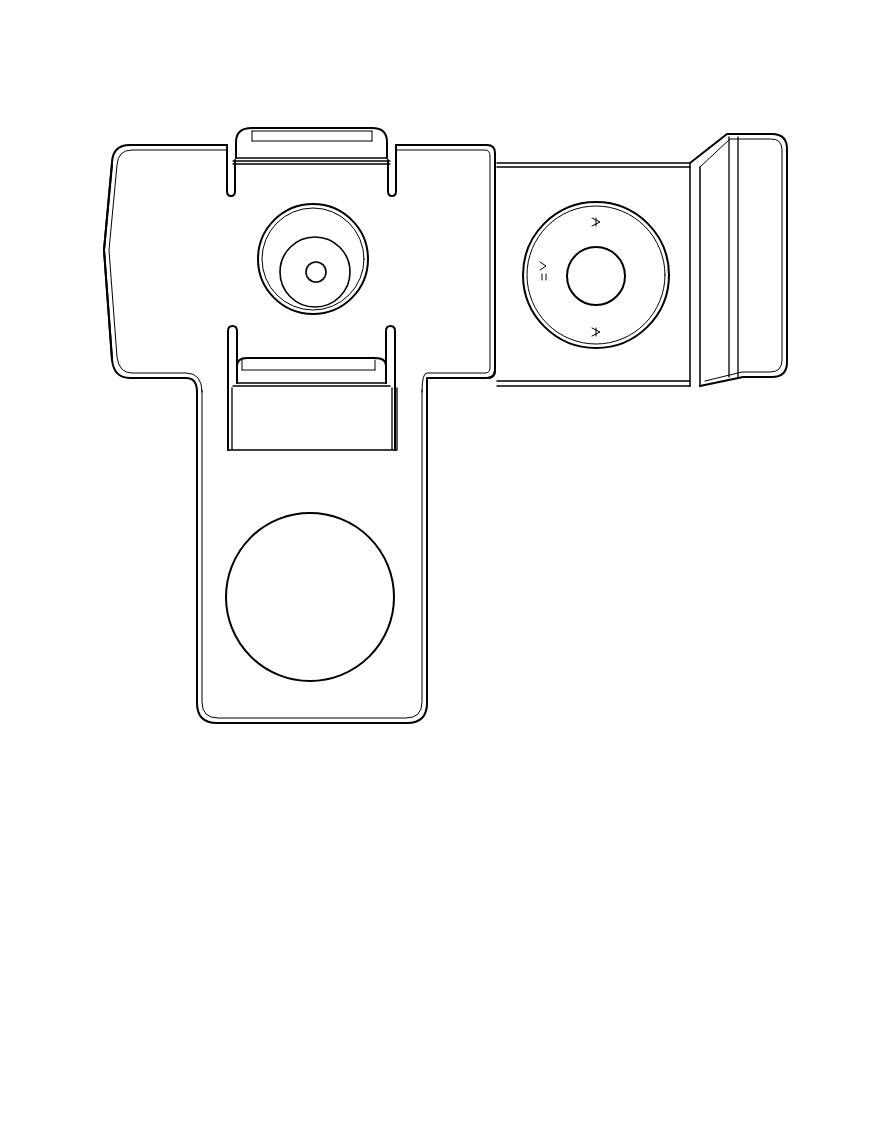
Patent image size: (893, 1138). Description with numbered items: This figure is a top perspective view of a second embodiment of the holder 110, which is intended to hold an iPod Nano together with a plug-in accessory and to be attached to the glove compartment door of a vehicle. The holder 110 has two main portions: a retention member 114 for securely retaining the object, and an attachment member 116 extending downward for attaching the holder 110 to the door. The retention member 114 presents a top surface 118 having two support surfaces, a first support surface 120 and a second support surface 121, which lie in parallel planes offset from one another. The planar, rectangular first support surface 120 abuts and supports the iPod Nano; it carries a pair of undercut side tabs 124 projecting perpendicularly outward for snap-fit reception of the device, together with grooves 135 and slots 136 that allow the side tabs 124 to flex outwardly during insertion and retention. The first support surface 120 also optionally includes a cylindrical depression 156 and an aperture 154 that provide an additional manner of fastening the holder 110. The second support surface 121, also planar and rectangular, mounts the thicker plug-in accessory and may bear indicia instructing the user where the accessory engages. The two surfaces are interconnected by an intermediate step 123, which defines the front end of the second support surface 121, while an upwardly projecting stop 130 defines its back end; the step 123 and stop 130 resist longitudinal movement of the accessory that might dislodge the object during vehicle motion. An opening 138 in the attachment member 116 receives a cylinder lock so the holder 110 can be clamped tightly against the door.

The holder 110 is at (143, 42).
The retention member 114 is at (200, 135).
The attachment member 116 is at (175, 546).
The top surface 118 is at (450, 168).
The first support surface 120 is at (157, 280).
The second support surface 121 is at (545, 192).
The intermediate step 123 is at (498, 357).
The side tabs 124 is at (295, 147).
The stop 130 is at (763, 350).
The grooves 135 is at (236, 169).
The slots 136 is at (295, 384).
The opening 138 is at (378, 595).
The aperture 154 is at (305, 272).
The cylindrical depression 156 is at (275, 288).